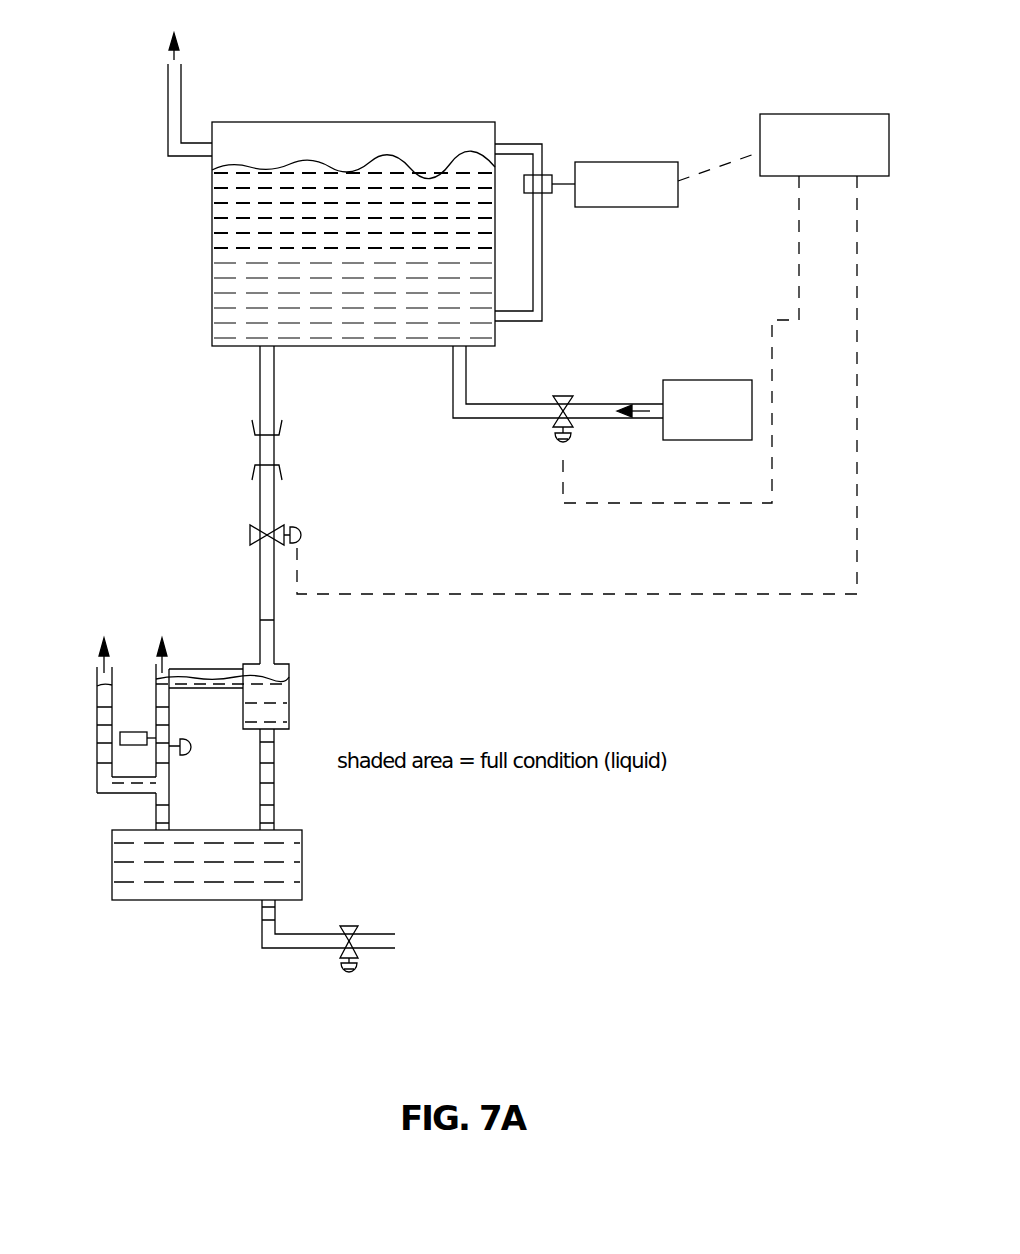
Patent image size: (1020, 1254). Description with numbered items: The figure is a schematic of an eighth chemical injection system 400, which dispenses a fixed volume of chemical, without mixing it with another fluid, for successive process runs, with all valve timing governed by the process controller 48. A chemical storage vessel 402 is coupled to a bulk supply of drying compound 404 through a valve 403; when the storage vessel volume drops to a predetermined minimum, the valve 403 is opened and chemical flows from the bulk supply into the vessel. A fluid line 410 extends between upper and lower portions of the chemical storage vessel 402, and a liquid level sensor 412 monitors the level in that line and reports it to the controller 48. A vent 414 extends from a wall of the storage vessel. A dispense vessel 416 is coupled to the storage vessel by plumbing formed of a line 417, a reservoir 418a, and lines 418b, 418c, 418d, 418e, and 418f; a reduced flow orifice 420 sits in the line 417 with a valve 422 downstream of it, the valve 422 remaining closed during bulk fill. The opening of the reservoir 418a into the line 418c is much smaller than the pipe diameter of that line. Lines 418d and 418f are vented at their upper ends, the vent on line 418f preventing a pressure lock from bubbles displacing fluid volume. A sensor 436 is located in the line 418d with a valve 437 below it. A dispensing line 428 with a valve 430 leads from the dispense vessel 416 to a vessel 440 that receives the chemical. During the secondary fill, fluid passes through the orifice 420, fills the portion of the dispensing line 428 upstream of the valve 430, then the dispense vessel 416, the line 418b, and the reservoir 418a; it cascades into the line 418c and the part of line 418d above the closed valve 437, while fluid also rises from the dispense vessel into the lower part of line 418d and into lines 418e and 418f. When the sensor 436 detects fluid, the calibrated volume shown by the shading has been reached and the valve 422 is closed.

The vent 414 is at (168, 151).
The chemical storage vessel 402 is at (212, 253).
The fluid line 410 is at (540, 253).
The liquid level sensor 412 is at (620, 160).
The process controller 48 is at (855, 112).
The chemical injection system 400 is at (688, 230).
The bulk supply of drying compound 404 is at (697, 380).
The valve 403 is at (565, 446).
The line 417 is at (272, 380).
The reduced flow orifice 420 is at (268, 449).
The valve 422 is at (304, 537).
The line 418c is at (208, 676).
The reservoir 418a is at (282, 695).
The line 418b is at (276, 797).
The line 418d is at (172, 806).
The line 418e is at (130, 797).
The line 418f is at (105, 707).
The sensor 436 is at (136, 712).
The valve 437 is at (193, 753).
The dispense vessel 416 is at (302, 858).
The dispensing line 428 is at (262, 936).
The valve 430 is at (359, 986).
The vessel 440 is at (395, 941).